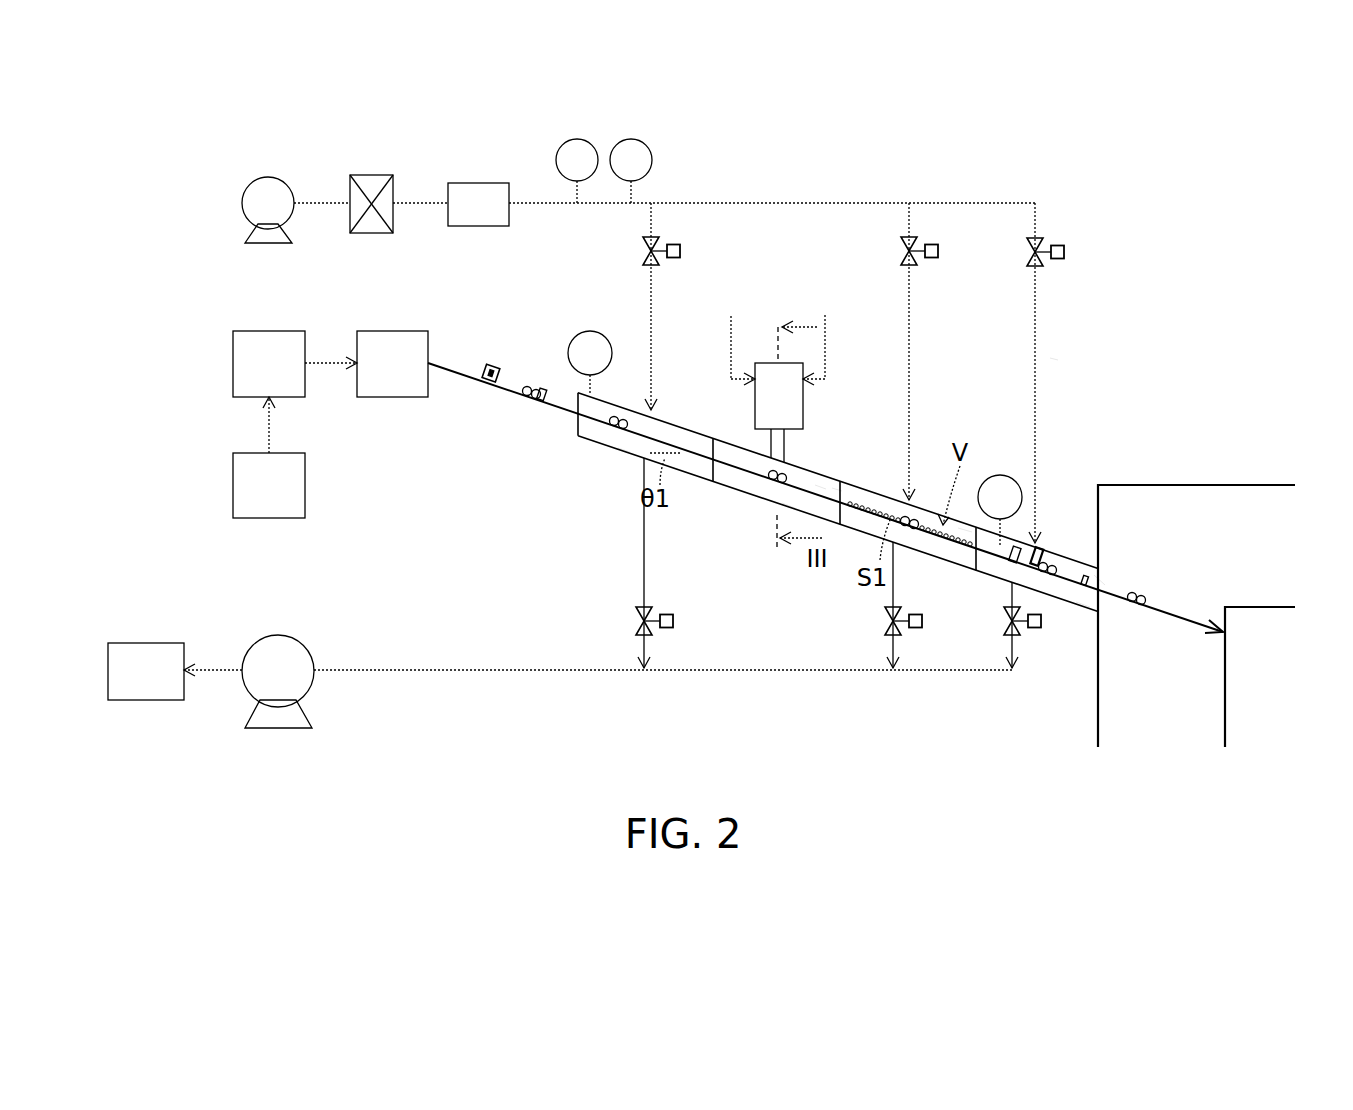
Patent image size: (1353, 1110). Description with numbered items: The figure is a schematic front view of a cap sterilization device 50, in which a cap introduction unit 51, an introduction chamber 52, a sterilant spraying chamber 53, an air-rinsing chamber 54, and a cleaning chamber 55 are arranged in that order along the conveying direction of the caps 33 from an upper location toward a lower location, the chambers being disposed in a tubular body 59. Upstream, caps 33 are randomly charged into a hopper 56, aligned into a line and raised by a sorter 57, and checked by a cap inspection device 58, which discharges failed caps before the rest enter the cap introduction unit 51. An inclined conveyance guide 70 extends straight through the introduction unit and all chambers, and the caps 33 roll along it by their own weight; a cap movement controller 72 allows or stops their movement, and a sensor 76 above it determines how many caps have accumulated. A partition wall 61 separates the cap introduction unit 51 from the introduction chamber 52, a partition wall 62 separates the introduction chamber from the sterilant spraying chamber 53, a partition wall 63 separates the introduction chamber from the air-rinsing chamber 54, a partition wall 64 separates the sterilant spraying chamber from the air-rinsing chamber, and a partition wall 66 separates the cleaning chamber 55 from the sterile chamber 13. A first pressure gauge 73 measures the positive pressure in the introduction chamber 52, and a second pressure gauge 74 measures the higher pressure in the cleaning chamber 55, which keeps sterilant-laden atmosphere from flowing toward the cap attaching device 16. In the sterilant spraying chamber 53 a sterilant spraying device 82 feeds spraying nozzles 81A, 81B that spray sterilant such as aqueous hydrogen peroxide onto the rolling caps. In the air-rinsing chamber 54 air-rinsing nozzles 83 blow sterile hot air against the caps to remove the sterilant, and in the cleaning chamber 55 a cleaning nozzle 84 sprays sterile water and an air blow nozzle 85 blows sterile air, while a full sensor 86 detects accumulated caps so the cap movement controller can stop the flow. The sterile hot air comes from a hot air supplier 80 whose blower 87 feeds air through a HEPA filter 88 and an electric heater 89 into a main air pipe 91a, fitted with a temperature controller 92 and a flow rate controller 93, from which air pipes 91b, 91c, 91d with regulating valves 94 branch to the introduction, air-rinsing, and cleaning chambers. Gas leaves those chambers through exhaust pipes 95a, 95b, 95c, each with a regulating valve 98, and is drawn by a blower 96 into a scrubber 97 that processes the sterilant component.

The sterile chamber 13 is at (1188, 483).
The cap attaching device 16 is at (1265, 605).
The caps 33 is at (525, 393).
The cap sterilization device 50 is at (1057, 358).
The cap introduction unit 51 is at (497, 368).
The introduction chamber 52 is at (666, 425).
The sterilant spraying chamber 53 is at (820, 480).
The air-rinsing chamber 54 is at (858, 523).
The cleaning chamber 55 is at (1082, 598).
The hopper 56 is at (269, 485).
The sorter 57 is at (269, 364).
The cap inspection device 58 is at (392, 364).
The tubular body 59 is at (623, 457).
The partition wall 61 is at (573, 405).
The partition wall 62 is at (705, 447).
The partition wall 63 is at (837, 483).
The partition wall 64 is at (965, 523).
The partition wall 66 is at (1100, 580).
The conveyance guide 70 is at (788, 497).
The cap movement controller 72 is at (548, 402).
The first pressure gauge 73 is at (590, 363).
The second pressure gauge 74 is at (1000, 510).
The sensor 76 is at (487, 380).
The hot air supplier 80 is at (422, 153).
The spraying nozzle 81A is at (767, 463).
The spraying nozzle 81B is at (730, 480).
The sterilant spraying device 82 is at (763, 372).
The air-rinsing nozzle 83 is at (928, 533).
The cleaning nozzle 84 is at (1010, 555).
The air blow nozzle 85 is at (1040, 550).
The full sensor 86 is at (1085, 576).
The blower 87 is at (268, 197).
The HEPA filter 88 is at (371, 188).
The electric heater 89 is at (478, 192).
The main air pipe 91a is at (840, 203).
The air pipe 91b is at (650, 278).
The air pipe 91c is at (911, 300).
The air pipe 91d is at (1037, 296).
The temperature controller 92 is at (577, 152).
The flow rate controller 93 is at (631, 152).
The regulating valve 94 is at (681, 250).
The exhaust pipe 95a is at (643, 532).
The exhaust pipe 95b is at (905, 648).
The exhaust pipe 95c is at (1017, 648).
The blower 96 is at (280, 697).
The scrubber 97 is at (148, 690).
The regulating valve 98 is at (675, 620).